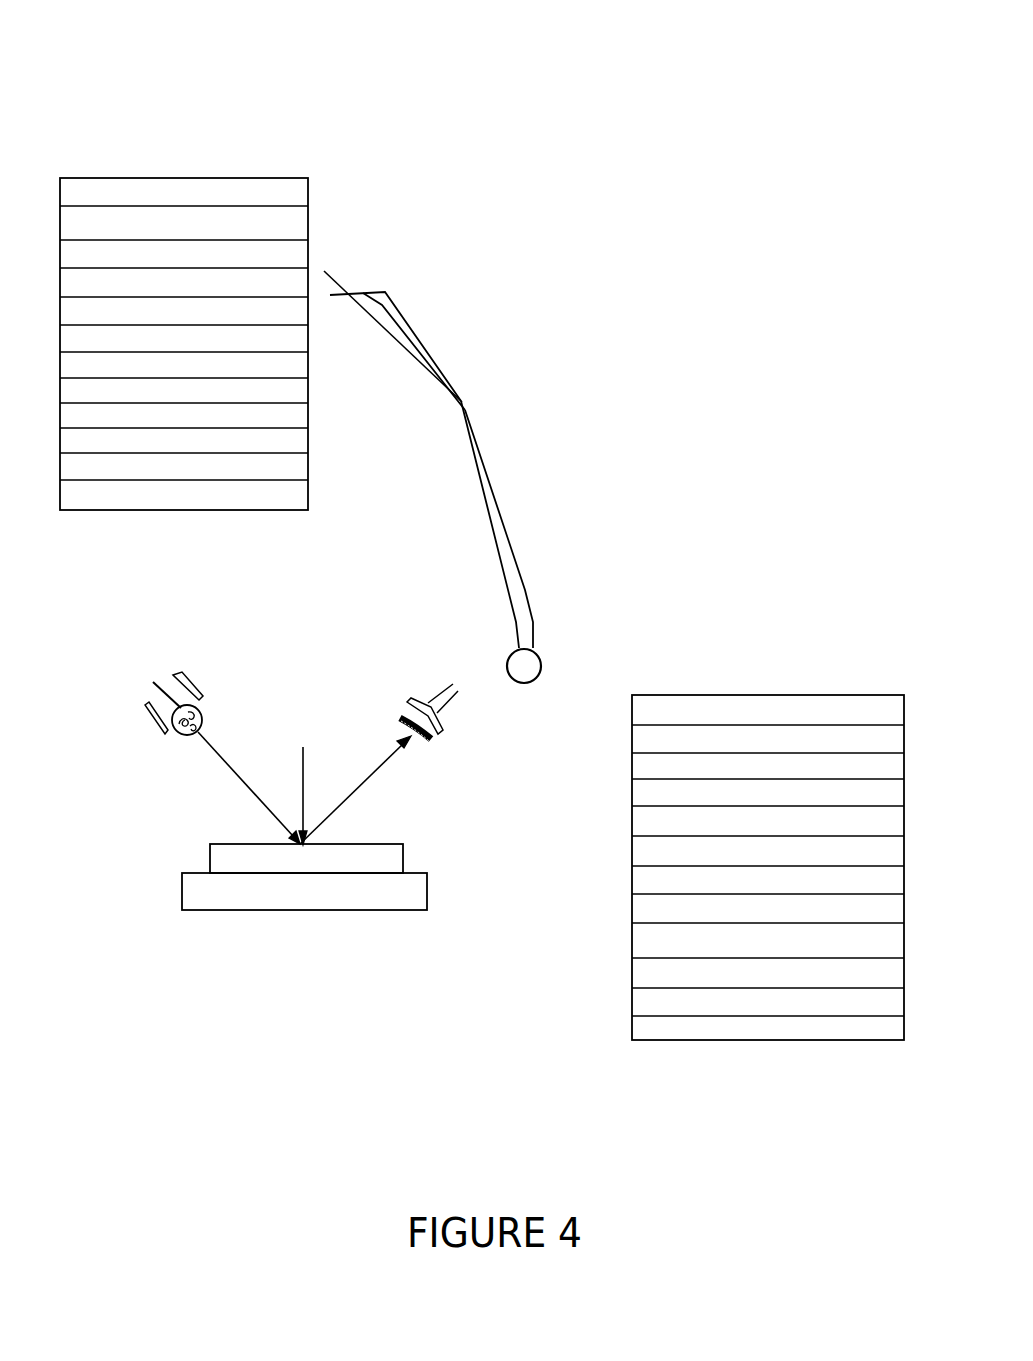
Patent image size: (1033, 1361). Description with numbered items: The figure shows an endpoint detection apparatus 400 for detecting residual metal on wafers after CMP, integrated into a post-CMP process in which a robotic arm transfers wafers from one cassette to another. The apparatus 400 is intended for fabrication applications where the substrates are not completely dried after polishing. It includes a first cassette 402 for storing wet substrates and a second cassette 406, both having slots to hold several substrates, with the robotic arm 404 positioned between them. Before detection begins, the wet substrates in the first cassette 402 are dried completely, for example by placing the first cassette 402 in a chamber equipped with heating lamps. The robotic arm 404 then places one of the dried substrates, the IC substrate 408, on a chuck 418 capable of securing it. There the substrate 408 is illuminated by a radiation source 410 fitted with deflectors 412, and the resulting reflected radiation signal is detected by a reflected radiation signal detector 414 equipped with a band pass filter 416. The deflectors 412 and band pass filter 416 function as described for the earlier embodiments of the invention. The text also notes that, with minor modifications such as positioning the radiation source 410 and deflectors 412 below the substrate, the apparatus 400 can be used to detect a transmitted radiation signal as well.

The endpoint detection apparatus 400 is at (392, 114).
The first cassette 402 is at (120, 177).
The robotic arm 404 is at (478, 461).
The second cassette 406 is at (813, 695).
The IC substrate 408 is at (229, 862).
The radiation source 410 is at (205, 723).
The deflectors 412 is at (150, 723).
The reflected radiation signal detector 414 is at (442, 723).
The band pass filter 416 is at (428, 742).
The chuck 418 is at (372, 896).